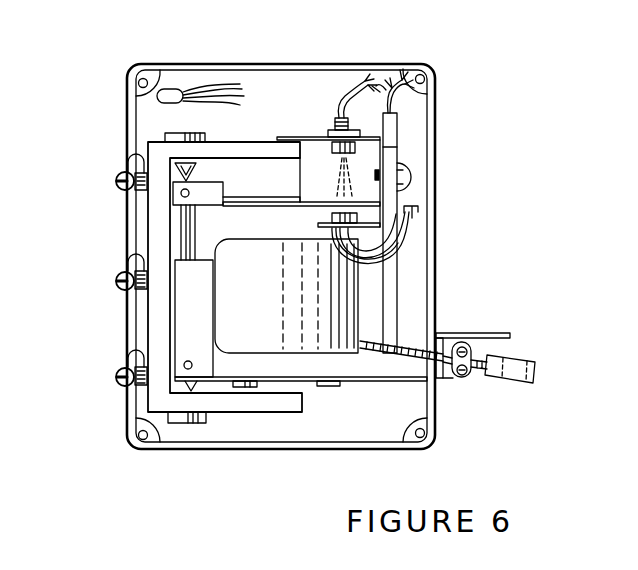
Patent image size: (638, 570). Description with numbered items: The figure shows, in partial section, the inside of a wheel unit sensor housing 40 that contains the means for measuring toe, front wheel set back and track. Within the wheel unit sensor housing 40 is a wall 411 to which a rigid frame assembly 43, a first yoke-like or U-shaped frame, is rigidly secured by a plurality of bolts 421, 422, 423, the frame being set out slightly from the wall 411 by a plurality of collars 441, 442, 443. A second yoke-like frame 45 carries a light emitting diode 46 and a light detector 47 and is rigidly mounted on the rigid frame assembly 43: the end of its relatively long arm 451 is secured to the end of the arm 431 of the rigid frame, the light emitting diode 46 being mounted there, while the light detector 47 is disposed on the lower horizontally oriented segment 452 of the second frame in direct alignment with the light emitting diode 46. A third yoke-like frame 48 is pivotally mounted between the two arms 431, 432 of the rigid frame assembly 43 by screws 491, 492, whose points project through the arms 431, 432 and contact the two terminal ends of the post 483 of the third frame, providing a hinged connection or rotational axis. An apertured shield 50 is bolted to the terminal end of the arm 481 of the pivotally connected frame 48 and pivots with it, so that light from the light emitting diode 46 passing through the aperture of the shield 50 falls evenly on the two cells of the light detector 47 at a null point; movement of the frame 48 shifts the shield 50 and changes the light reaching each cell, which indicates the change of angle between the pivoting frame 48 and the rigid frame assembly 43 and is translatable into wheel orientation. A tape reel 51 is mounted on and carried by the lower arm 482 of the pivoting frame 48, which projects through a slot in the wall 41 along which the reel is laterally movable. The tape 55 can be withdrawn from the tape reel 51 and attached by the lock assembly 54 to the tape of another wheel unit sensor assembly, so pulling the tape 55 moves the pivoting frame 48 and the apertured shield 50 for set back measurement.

The wheel unit sensor housing 40 is at (439, 95).
The wall 41 is at (436, 150).
The wall 411 is at (128, 107).
The bolt 421 is at (122, 190).
The bolt 422 is at (122, 290).
The bolt 423 is at (122, 386).
The collar 441 is at (135, 162).
The collar 442 is at (134, 258).
The collar 443 is at (134, 357).
The rigid frame assembly 43 is at (235, 255).
The arm 431 is at (298, 140).
The arm 432 is at (281, 413).
The second yoke-like frame 45 is at (306, 137).
The arm of second yoke-like frame 451 is at (362, 158).
The horizontally oriented segment 452 is at (392, 250).
The light emitting diode 46 is at (334, 113).
The light detector 47 is at (345, 221).
The third yoke-like frame 48 is at (300, 279).
The arm 481 is at (212, 178).
The lower arm 482 is at (360, 396).
The post 483 is at (196, 230).
The screw 491 is at (195, 140).
The screw 492 is at (200, 423).
The apertured shield 50 is at (358, 206).
The tape reel 51 is at (360, 301).
The lock assembly 54 is at (522, 353).
The tape 55 is at (482, 367).